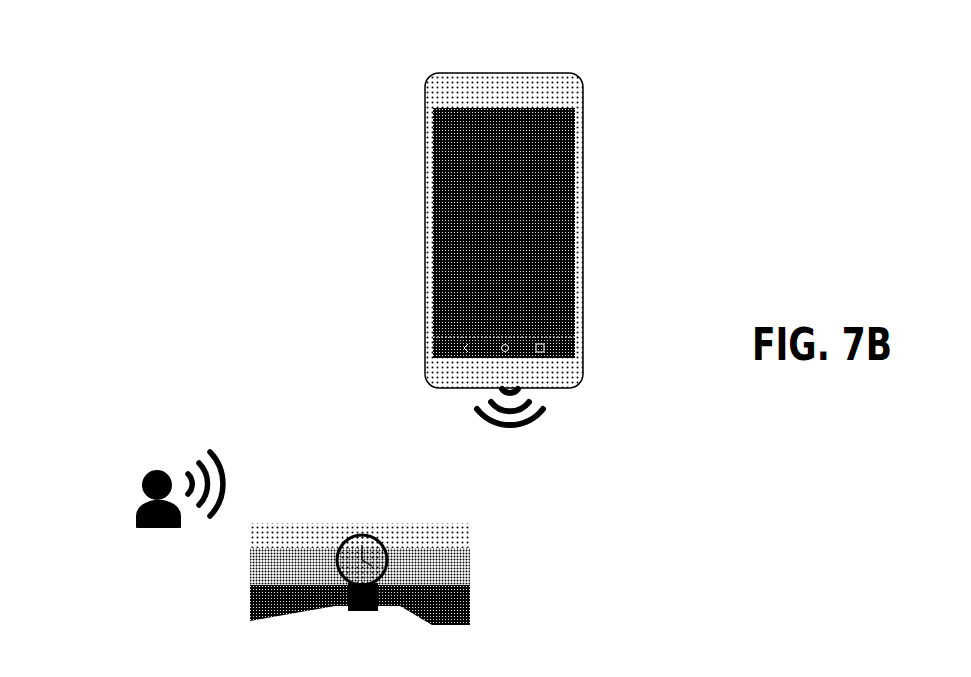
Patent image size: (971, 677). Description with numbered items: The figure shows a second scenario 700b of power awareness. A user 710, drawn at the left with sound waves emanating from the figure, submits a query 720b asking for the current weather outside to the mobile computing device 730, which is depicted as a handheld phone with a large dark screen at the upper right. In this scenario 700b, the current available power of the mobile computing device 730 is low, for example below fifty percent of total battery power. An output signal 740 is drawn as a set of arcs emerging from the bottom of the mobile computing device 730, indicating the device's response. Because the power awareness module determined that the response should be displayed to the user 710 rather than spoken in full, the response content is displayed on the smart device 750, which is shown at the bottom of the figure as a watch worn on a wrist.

The second scenario 700b is at (168, 148).
The user 710 is at (133, 448).
The query 720b is at (229, 461).
The mobile computing device 730 is at (472, 243).
The audio response / output signal 740 is at (463, 423).
The smart device 750 is at (415, 572).